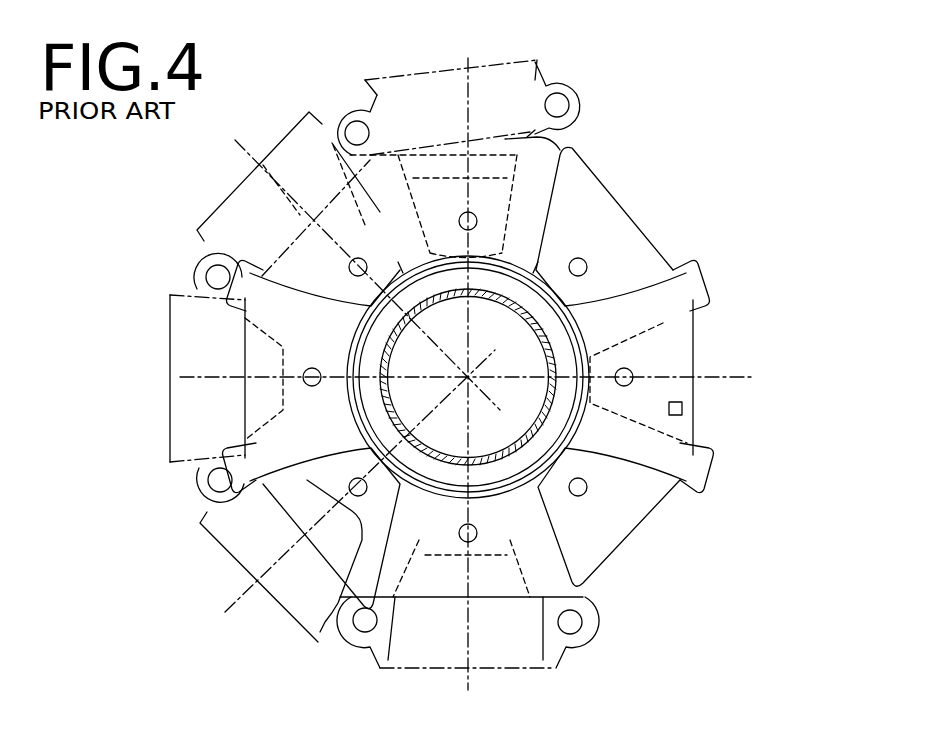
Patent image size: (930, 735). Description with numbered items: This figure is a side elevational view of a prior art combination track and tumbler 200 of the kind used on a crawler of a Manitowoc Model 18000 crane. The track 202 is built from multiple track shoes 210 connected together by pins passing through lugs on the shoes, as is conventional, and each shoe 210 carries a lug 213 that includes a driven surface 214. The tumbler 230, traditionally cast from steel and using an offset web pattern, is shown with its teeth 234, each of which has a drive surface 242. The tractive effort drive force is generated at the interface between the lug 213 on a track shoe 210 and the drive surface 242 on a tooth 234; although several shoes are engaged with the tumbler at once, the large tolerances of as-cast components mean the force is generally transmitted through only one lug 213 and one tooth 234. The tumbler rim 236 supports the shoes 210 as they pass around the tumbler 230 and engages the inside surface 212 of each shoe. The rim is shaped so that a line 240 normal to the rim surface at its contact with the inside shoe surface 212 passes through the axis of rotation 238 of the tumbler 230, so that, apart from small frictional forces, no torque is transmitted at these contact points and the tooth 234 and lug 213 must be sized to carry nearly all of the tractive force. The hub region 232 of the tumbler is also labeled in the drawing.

The combination track and tumbler 200 is at (692, 150).
The track 202 is at (575, 61).
The track shoe 210 is at (497, 75).
The inside surface 212 is at (512, 137).
The lug 213 is at (438, 160).
The driven surface 214 is at (533, 612).
The tumbler 230 is at (699, 318).
The hub ring 232 is at (528, 445).
The tooth 234 is at (700, 276).
The tumbler rim 236 is at (632, 208).
The axis of rotation 238 is at (468, 377).
The line normal to the rim surface 240 is at (478, 207).
The drive surface 242 is at (570, 150).